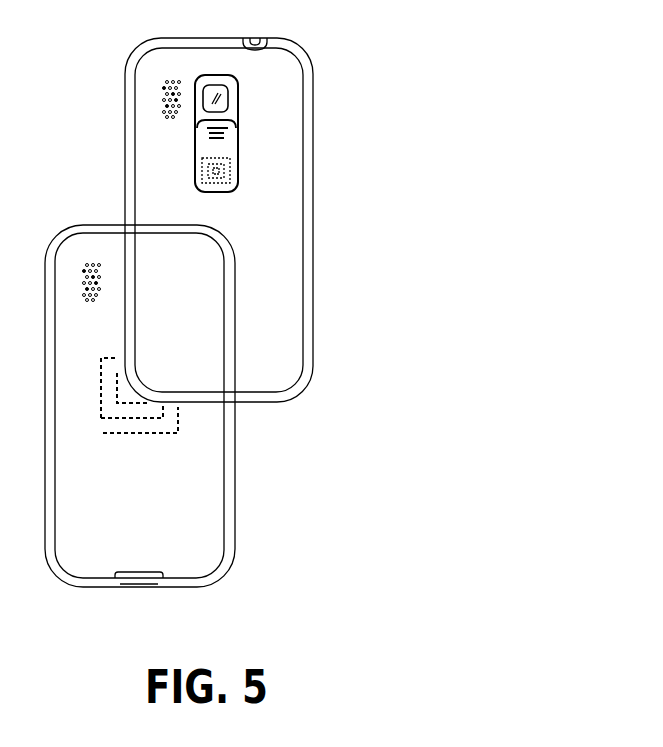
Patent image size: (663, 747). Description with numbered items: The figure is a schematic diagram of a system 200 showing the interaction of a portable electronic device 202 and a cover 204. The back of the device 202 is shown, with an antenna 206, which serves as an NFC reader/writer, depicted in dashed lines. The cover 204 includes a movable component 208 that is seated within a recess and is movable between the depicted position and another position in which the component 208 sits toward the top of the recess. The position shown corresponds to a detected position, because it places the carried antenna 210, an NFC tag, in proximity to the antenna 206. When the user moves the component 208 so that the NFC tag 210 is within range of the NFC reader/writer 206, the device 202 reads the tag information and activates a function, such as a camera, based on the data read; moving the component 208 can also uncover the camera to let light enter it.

The system 200 is at (498, 88).
The portable electronic device 202 is at (235, 482).
The cover 204 is at (315, 127).
The antenna 206 is at (163, 417).
The movable component 208 is at (230, 145).
The carried antenna 210 is at (235, 185).